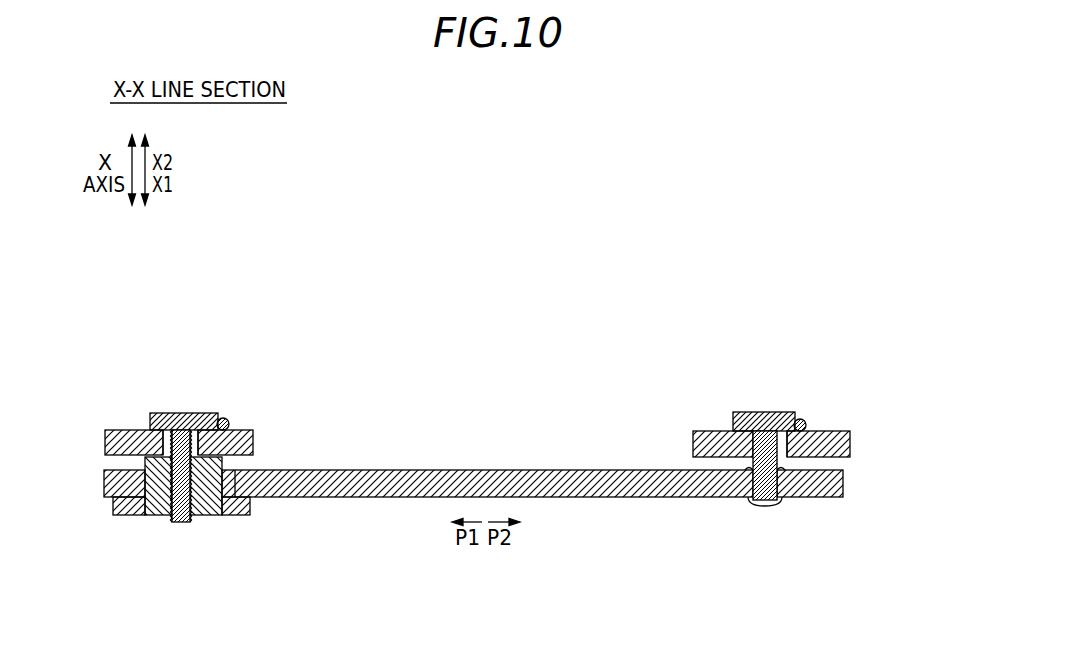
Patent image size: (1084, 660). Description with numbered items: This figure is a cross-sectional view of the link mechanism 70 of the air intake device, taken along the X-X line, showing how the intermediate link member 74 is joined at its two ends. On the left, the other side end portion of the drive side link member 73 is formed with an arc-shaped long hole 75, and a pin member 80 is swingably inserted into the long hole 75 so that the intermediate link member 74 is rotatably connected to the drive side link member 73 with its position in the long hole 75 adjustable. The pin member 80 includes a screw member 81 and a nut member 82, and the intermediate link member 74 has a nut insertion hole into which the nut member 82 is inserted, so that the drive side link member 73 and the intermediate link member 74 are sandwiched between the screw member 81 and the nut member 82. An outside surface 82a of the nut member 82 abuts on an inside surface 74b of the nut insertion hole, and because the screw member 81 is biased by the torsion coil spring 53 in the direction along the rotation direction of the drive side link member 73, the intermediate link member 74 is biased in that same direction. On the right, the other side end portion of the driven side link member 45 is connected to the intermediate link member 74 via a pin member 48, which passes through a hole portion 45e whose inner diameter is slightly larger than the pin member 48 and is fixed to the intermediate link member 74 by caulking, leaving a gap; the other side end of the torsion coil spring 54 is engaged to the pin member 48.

The link mechanism 70 is at (748, 207).
The drive side link member 73 is at (127, 430).
The screw member 81 is at (166, 430).
The pin member 80 is at (194, 404).
The torsion coil spring 53 is at (225, 418).
The intermediate link member 74 is at (462, 470).
The long hole 75 is at (205, 440).
The nut member 82 is at (207, 515).
The outside surface 82a is at (134, 515).
The inside surface 74b is at (160, 515).
The driven side link member 45 is at (708, 431).
The pin member 48 is at (748, 427).
The torsion coil spring 54 is at (803, 420).
The hole portion 45e is at (792, 440).